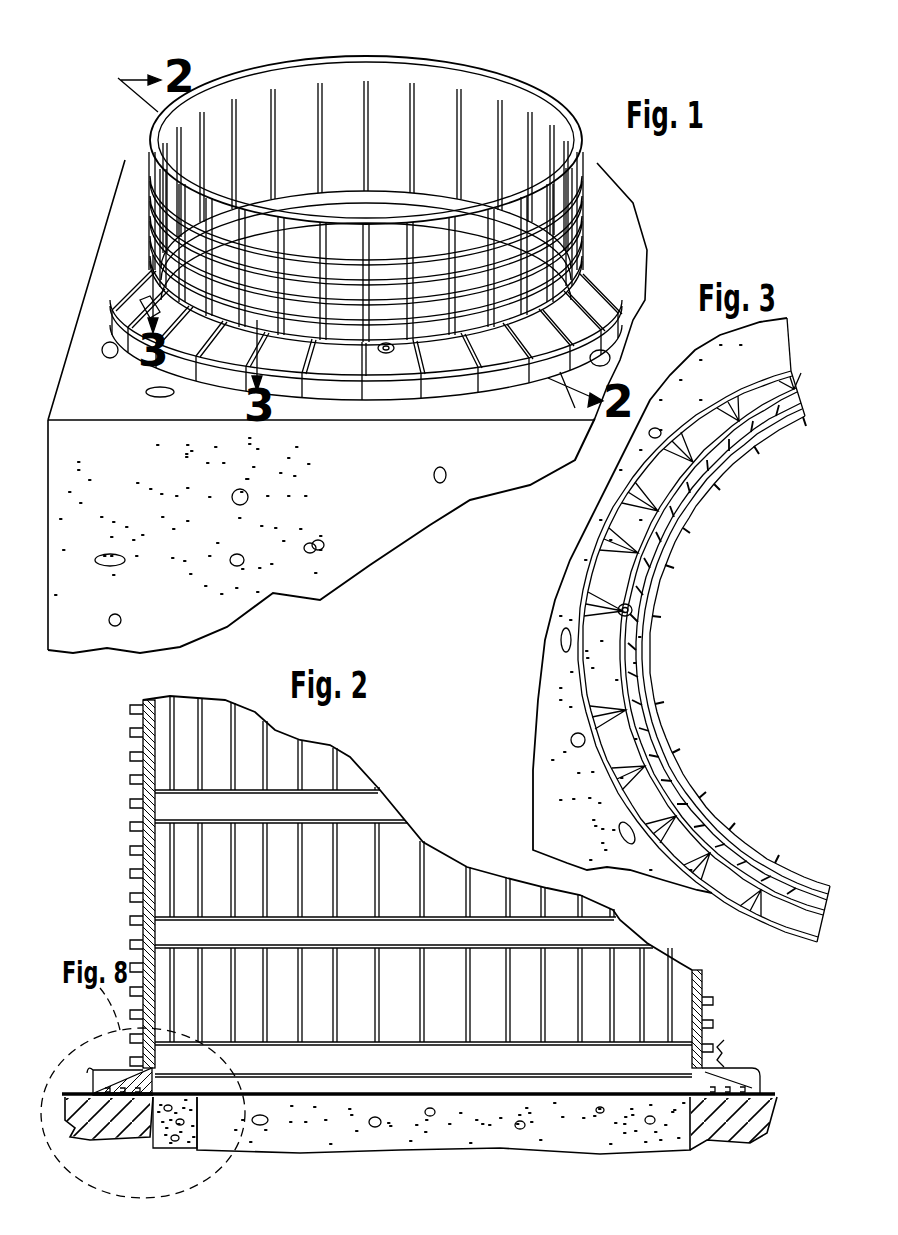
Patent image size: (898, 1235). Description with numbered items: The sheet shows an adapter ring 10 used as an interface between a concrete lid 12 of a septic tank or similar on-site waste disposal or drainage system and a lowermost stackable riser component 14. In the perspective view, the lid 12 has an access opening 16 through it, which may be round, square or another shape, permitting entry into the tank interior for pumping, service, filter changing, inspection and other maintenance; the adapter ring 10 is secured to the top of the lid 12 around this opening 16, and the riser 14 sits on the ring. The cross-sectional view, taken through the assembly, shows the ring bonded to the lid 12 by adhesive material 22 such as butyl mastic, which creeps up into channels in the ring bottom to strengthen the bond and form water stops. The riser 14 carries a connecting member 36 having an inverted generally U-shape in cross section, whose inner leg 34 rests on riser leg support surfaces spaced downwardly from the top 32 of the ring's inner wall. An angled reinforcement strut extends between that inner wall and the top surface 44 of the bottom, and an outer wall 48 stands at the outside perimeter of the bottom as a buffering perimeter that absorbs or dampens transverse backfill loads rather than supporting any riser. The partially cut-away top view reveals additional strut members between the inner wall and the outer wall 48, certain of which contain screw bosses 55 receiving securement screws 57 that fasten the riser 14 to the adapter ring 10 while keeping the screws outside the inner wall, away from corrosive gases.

In FIG. 1, the adapter ring 10 is at (606, 325).
In FIG. 1, the concrete lid 12 is at (358, 510).
In FIG. 3, the concrete lid 12 is at (662, 605).
In FIG. 2, the concrete lid 12 is at (735, 1115).
In FIG. 1, the lowermost stackable riser component 14 is at (510, 110).
In FIG. 1, the access opening 16 is at (393, 218).
In FIG. 2, the access opening 16 is at (157, 1058).
In FIG. 2, the adhesive material 22 is at (756, 1092).
In FIG. 3, the top of the inner wall 32 is at (664, 772).
In FIG. 2, the inner leg 34 is at (217, 1097).
In FIG. 2, the connecting member 36 is at (724, 1052).
In FIG. 2, the top surface of the bottom 44 is at (140, 1086).
In FIG. 1, the outer wall 48 is at (148, 322).
In FIG. 2, the outer wall 48 is at (88, 1072).
In FIG. 1, the screw bosses 55 is at (392, 354).
In FIG. 3, the screw bosses 55 is at (737, 851).
In FIG. 3, the securement screws 57 is at (634, 614).